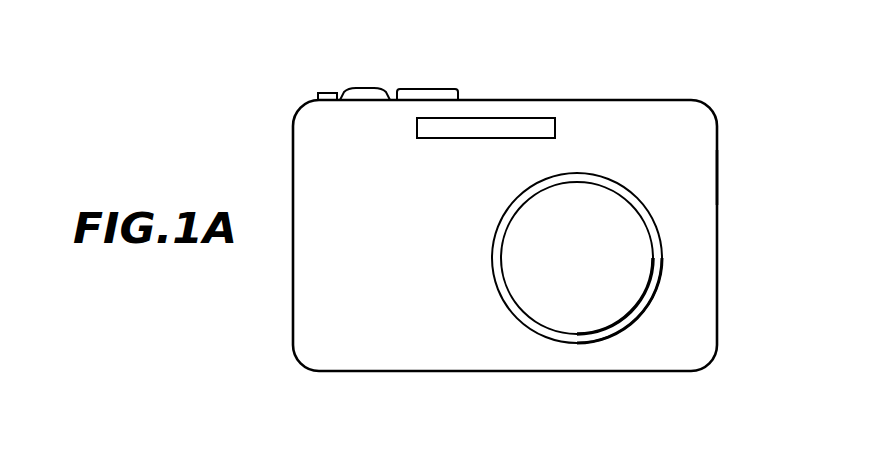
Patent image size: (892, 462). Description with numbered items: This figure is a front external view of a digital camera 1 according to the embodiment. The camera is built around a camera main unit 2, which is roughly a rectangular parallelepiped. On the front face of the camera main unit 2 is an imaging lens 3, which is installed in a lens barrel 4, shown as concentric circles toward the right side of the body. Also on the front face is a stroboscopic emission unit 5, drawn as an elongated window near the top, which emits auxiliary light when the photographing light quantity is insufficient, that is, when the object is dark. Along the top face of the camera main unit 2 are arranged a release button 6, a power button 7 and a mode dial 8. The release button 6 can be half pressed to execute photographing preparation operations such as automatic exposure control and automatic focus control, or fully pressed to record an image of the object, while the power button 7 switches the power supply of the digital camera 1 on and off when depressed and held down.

The digital camera 1 is at (707, 97).
The camera main unit 2 is at (718, 177).
The imaging lens 3 is at (634, 235).
The lens barrel 4 is at (658, 292).
The stroboscopic emission unit 5 is at (493, 127).
The release button 6 is at (367, 90).
The power button 7 is at (328, 92).
The mode dial 8 is at (435, 87).